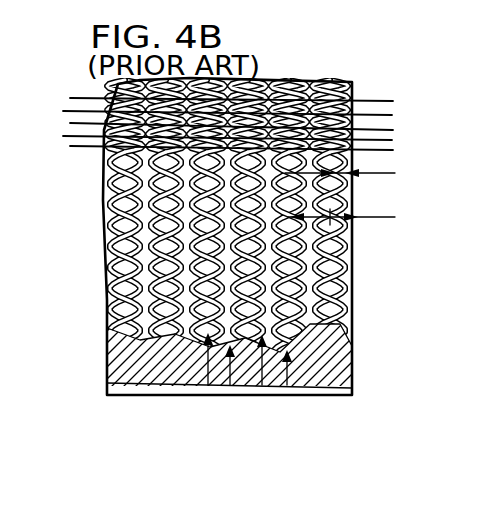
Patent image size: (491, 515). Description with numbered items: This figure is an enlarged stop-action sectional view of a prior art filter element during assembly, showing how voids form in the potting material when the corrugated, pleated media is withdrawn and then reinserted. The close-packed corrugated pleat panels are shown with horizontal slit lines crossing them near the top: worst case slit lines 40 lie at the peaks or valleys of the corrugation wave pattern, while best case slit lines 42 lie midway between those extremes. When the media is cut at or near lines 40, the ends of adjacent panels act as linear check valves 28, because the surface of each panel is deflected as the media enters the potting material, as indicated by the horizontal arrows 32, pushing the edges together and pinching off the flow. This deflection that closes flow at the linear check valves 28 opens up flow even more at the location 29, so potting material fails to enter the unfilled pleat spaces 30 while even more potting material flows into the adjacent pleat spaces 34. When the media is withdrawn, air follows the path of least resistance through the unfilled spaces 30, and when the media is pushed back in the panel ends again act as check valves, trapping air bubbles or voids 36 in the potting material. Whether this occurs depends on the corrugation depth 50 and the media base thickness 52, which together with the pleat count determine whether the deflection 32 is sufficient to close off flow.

The linear check valve 28 is at (225, 395).
The opened flow location 29 is at (212, 395).
The pleat space 30 is at (137, 305).
The horizontal arrows 32 is at (200, 327).
The pleat space 34 is at (302, 284).
The voids 36 is at (105, 367).
The worst case slit lines 40 is at (408, 153).
The best case slit lines 42 is at (65, 111).
The corrugation depth 50 is at (357, 218).
The media base thickness 52 is at (356, 173).